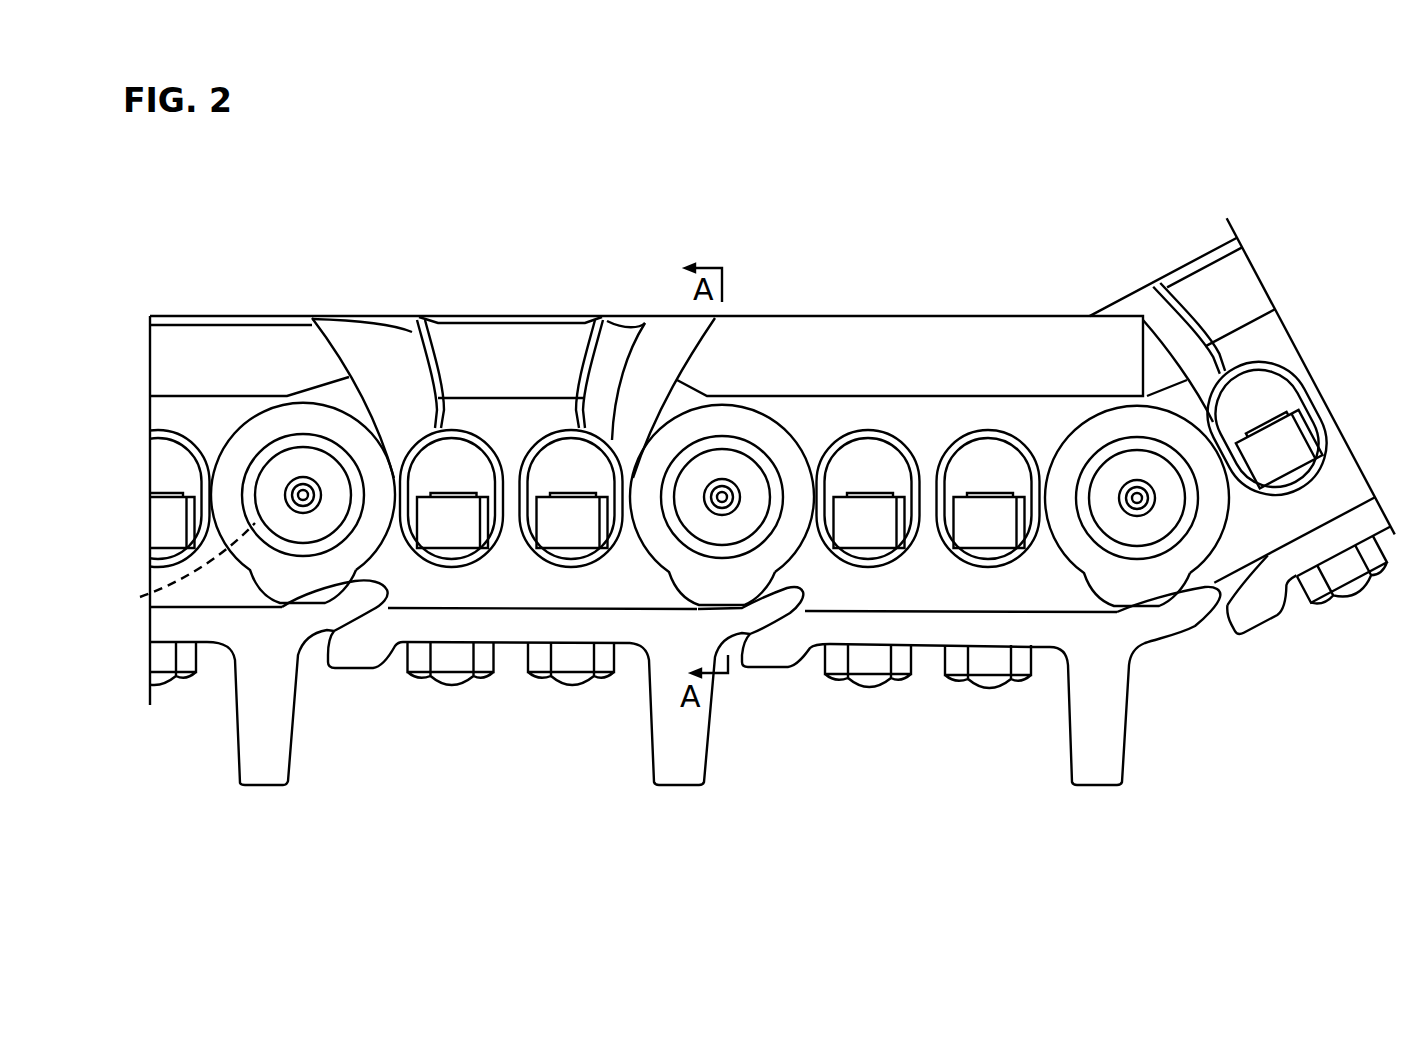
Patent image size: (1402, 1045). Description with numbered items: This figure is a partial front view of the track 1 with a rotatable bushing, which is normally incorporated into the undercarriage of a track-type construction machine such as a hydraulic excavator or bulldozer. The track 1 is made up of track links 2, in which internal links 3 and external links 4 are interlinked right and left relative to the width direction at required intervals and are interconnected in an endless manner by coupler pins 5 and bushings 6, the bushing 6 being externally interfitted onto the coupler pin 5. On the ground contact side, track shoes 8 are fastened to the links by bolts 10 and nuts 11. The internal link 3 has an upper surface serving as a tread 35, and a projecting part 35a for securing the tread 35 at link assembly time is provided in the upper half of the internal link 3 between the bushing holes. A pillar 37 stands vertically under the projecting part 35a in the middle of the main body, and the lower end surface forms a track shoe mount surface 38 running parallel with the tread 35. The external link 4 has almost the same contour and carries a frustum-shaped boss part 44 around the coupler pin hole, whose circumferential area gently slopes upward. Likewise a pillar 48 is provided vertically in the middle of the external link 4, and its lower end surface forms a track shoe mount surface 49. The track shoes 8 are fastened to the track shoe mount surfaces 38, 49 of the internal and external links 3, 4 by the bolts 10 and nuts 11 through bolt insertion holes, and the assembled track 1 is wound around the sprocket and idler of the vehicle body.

The track 1 is at (478, 280).
The track link 2 is at (1046, 288).
The internal link 3 is at (660, 363).
The external link 4 is at (878, 385).
The coupler pin 5 is at (300, 525).
The bushing 6 is at (181, 574).
The track shoe 8 is at (902, 630).
The bolt 10 is at (450, 667).
The nut 11 is at (533, 513).
The tread 35 is at (368, 316).
The projecting part 35a is at (543, 347).
The pillar 37 is at (513, 513).
The track shoe mount surface 38 is at (417, 640).
The boss part 44 is at (280, 423).
The pillar 48 is at (927, 527).
The track shoe mount surface 49 is at (845, 612).